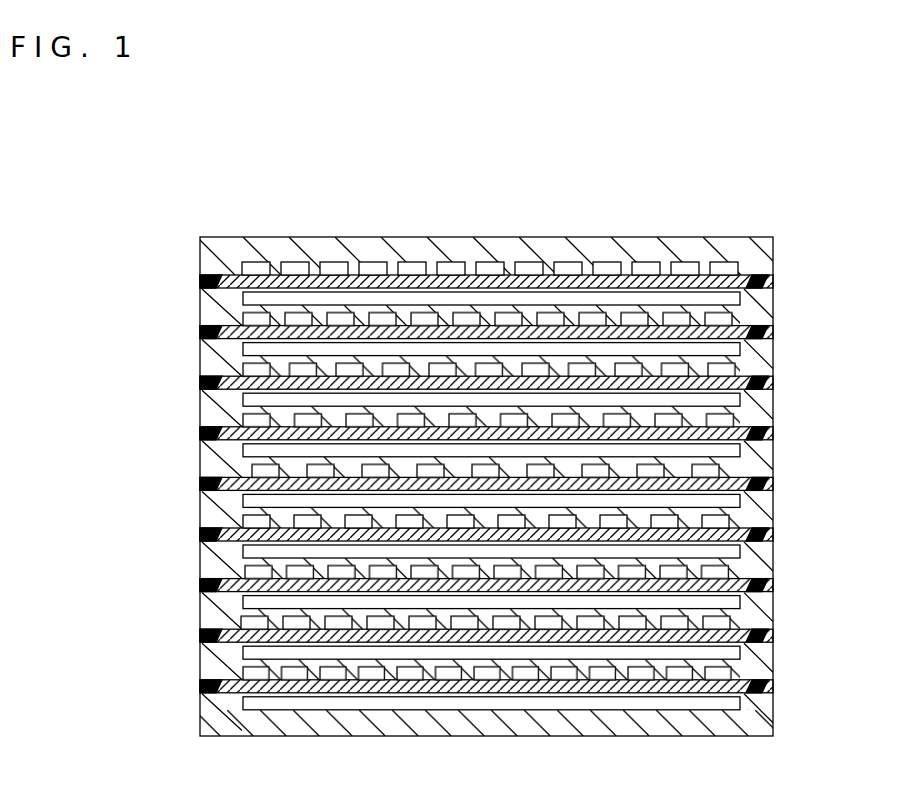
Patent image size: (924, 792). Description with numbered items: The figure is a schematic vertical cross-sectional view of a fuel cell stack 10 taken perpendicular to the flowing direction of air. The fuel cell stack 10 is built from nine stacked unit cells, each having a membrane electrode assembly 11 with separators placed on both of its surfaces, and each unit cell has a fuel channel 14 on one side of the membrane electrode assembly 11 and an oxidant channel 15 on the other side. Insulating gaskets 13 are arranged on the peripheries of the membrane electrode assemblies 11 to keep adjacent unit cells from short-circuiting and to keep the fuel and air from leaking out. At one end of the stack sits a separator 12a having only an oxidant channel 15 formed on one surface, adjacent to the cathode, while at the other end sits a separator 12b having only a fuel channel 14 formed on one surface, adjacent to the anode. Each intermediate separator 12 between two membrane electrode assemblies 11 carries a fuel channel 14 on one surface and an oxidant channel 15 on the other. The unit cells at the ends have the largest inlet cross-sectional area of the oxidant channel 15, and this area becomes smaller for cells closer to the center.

The fuel cell stack 10 is at (509, 202).
The membrane electrode assembly 11 is at (735, 272).
The separator 12 is at (752, 359).
The separator 12a is at (330, 245).
The separator 12b is at (508, 717).
The insulating gasket 13 is at (750, 437).
The fuel channel 14 is at (409, 300).
The oxidant channel 15 is at (604, 266).